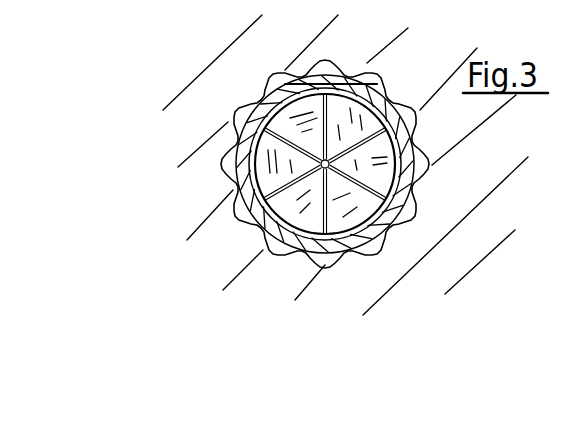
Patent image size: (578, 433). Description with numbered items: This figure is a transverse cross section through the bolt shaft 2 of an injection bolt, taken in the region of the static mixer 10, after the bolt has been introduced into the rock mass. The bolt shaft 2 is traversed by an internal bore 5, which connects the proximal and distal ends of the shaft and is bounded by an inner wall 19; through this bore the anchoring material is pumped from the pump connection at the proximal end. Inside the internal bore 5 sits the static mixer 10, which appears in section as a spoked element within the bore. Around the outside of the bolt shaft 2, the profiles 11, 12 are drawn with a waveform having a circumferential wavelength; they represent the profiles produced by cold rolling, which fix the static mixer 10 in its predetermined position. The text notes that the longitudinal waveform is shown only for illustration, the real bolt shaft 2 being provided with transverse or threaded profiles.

The bolt shaft 2 is at (433, 163).
The internal bore 5 is at (318, 250).
The static mixer 10 is at (360, 236).
The profile 11 is at (240, 194).
The profile 12 is at (287, 253).
The inner wall 19 is at (383, 90).